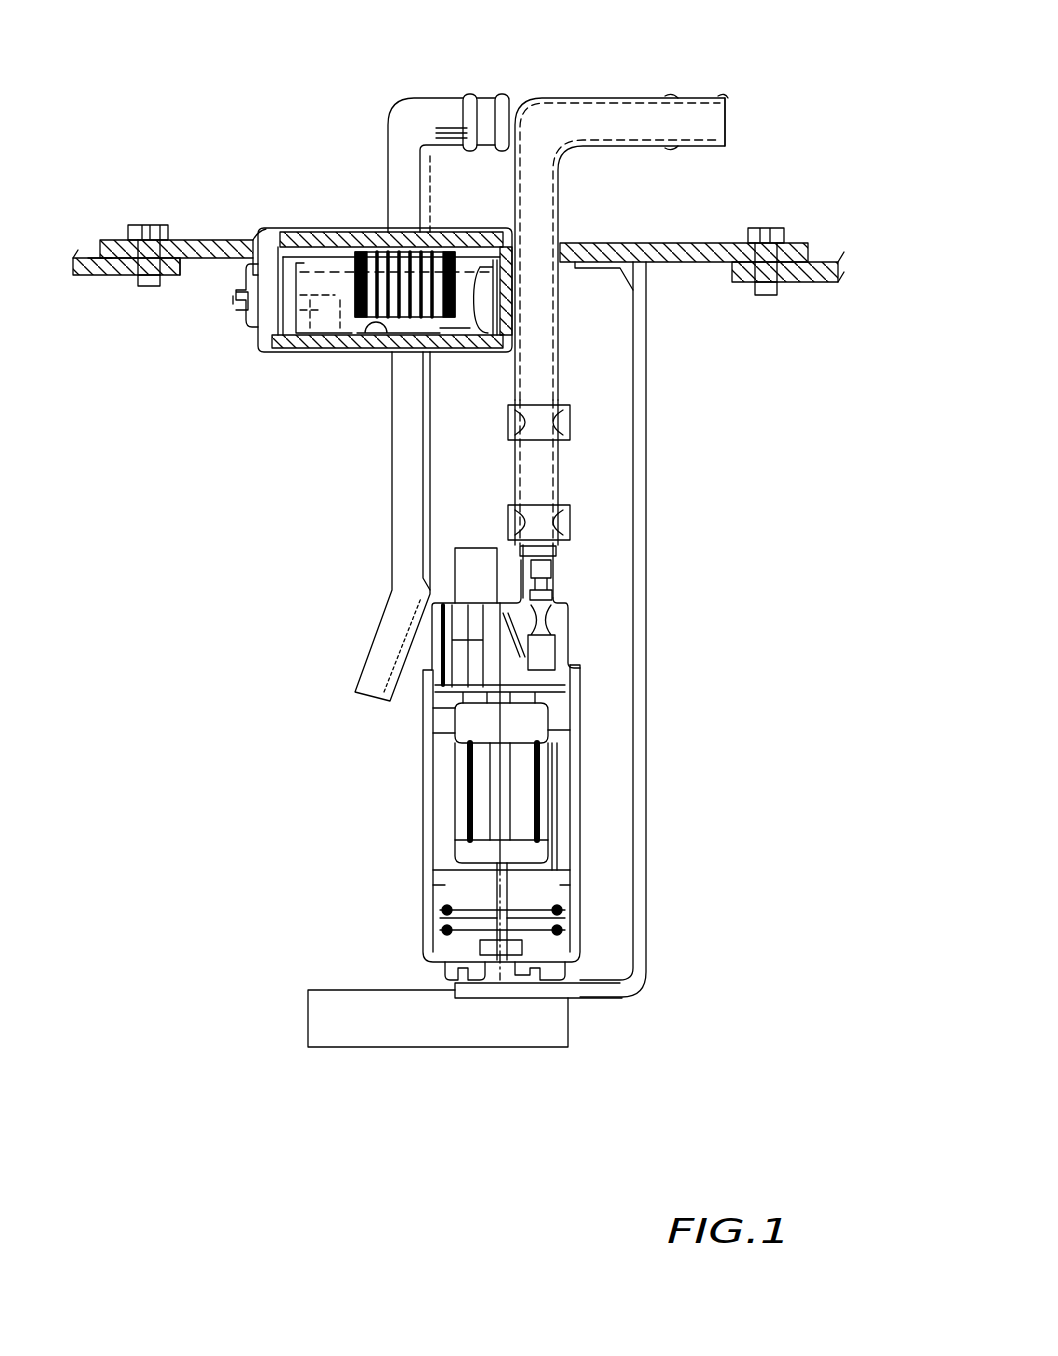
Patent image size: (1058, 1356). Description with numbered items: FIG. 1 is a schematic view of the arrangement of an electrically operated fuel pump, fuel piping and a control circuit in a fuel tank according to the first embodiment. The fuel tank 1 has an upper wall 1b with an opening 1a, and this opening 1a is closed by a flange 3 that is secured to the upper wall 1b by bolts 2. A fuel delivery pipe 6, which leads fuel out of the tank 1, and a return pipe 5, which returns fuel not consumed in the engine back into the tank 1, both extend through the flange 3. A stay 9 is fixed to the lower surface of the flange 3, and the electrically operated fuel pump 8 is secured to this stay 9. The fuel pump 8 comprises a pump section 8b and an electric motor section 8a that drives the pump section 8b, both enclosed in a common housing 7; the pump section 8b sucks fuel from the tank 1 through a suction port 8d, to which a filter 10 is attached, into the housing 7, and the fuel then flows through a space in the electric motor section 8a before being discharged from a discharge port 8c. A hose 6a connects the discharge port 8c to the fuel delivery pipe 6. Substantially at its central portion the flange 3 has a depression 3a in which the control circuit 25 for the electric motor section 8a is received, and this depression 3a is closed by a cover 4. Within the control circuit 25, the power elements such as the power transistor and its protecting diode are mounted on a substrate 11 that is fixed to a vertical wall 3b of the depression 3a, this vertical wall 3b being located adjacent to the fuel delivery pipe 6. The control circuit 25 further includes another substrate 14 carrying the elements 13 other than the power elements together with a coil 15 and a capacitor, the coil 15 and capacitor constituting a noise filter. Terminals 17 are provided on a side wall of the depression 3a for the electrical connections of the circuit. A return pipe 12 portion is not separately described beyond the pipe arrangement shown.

The fuel tank 1 is at (63, 236).
The opening 1a is at (192, 260).
The upper wall 1b is at (90, 257).
The bolts 2 is at (147, 226).
The flange 3 is at (210, 238).
The depression 3a is at (287, 240).
The vertical wall 3b is at (520, 305).
The cover 4 is at (297, 228).
The control circuit 25 is at (333, 253).
The return pipe 5 is at (403, 98).
The fuel delivery pipe 6 is at (572, 100).
The hose 6a is at (560, 478).
The housing 7 is at (585, 690).
The electrically operated fuel pump 8 is at (570, 764).
The electric motor section 8a is at (590, 788).
The pump section 8b is at (590, 915).
The discharge port 8c is at (565, 565).
The suction port 8d is at (557, 973).
The stay 9 is at (648, 978).
The filter 10 is at (440, 1047).
The substrate 11 is at (490, 350).
The return pipe 12 is at (463, 352).
The elements 13 is at (357, 350).
The substrate 14 is at (348, 340).
The coil 15 is at (305, 352).
The terminals 17 is at (240, 310).